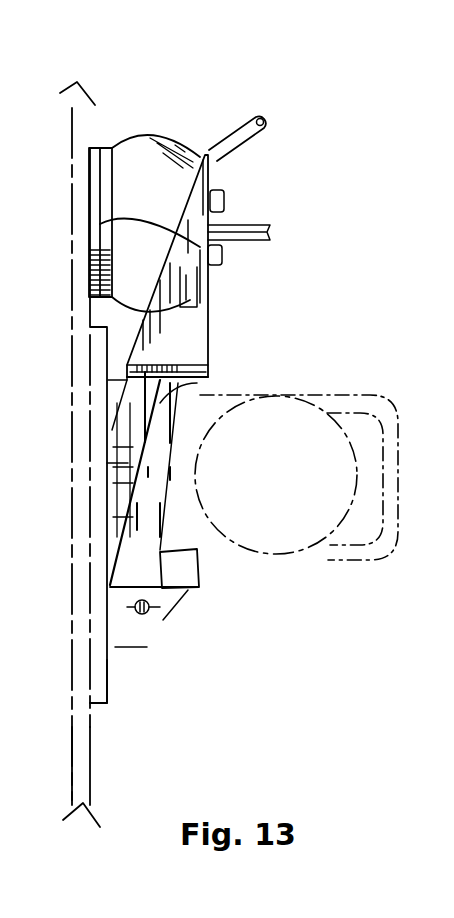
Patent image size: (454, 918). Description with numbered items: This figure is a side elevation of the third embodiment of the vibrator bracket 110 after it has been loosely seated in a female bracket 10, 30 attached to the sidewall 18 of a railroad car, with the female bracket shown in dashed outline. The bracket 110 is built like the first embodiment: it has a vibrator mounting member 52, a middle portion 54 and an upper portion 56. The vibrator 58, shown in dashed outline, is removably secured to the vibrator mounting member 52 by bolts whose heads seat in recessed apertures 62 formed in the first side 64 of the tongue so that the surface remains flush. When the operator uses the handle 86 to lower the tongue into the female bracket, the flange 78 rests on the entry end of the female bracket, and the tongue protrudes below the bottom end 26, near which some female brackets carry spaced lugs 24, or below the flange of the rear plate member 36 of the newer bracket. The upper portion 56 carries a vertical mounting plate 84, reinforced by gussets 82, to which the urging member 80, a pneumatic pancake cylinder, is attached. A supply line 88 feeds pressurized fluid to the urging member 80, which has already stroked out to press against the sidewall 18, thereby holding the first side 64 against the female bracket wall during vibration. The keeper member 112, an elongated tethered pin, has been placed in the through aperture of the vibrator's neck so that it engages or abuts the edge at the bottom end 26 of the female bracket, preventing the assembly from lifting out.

The C-type female bracket 10 is at (197, 422).
The female bracket 30 is at (141, 565).
The sidewall 18 is at (88, 122).
The urging member 80 is at (95, 147).
The gussets 82 is at (98, 226).
The handle 86 is at (243, 125).
The supply line 88 is at (246, 222).
The vibrator bracket 110 is at (315, 222).
The vertical mounting plate 84 is at (207, 280).
The upper portion 56 is at (280, 304).
The flange 78 is at (207, 343).
The middle portion 54 is at (268, 370).
The recessed apertures 62 is at (112, 403).
The first side 64 is at (107, 463).
The spaced lugs 24 is at (235, 553).
The vibrator 58 is at (332, 557).
The bottom end 26 is at (133, 606).
The vibrator mounting member 52 is at (147, 575).
The keeper member 112 is at (130, 615).
The rear plate member 36 is at (93, 703).